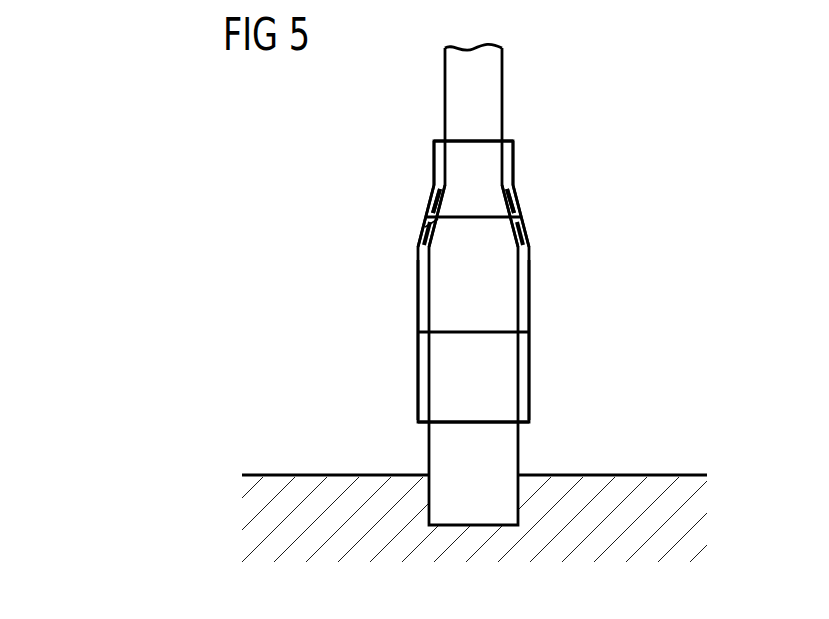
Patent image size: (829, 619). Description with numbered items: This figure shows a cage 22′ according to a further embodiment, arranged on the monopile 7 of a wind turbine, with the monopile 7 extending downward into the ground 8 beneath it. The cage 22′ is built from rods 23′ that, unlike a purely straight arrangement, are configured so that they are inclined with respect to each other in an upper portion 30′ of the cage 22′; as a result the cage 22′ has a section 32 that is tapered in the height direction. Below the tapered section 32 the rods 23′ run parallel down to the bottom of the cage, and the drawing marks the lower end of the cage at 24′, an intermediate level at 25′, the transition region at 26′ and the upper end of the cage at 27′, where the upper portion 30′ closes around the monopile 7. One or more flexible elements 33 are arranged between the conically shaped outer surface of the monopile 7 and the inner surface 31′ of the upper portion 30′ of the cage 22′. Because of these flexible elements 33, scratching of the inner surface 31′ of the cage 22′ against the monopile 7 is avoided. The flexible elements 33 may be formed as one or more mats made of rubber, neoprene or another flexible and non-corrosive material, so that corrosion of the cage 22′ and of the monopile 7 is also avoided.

The monopile 7 is at (503, 70).
The ground / seabed 8 is at (660, 475).
The cage 22′ is at (418, 291).
The rods 23′ is at (418, 373).
The sleeve bottom 24′ is at (498, 422).
The intermediate plate 25′ is at (499, 332).
The conical transition section 26′ is at (505, 205).
The upper collar 27′ is at (483, 141).
The upper portion 30′ is at (430, 207).
The inner surface 31′ is at (431, 226).
The section 32 is at (510, 201).
The flexible elements 33 is at (428, 233).